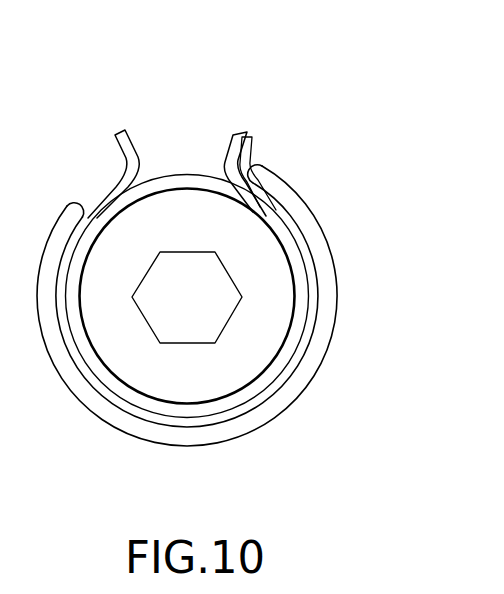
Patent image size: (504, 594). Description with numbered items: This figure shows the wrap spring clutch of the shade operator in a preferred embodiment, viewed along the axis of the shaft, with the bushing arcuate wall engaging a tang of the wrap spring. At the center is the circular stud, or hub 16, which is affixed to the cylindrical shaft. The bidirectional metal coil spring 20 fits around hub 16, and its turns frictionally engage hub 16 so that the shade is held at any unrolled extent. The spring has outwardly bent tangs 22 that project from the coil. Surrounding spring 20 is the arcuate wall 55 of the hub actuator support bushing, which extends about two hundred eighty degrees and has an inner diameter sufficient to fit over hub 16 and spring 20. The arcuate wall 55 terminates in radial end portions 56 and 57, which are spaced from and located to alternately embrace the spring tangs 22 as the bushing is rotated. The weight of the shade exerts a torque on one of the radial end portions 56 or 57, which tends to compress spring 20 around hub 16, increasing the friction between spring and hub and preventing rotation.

The circular stud 16 is at (112, 351).
The bidirectional metal coil spring 20 is at (183, 174).
The tangs 22 is at (127, 130).
The arcuate wall 55 is at (318, 375).
The radial end portion 56 is at (267, 177).
The radial end portion 57 is at (67, 205).